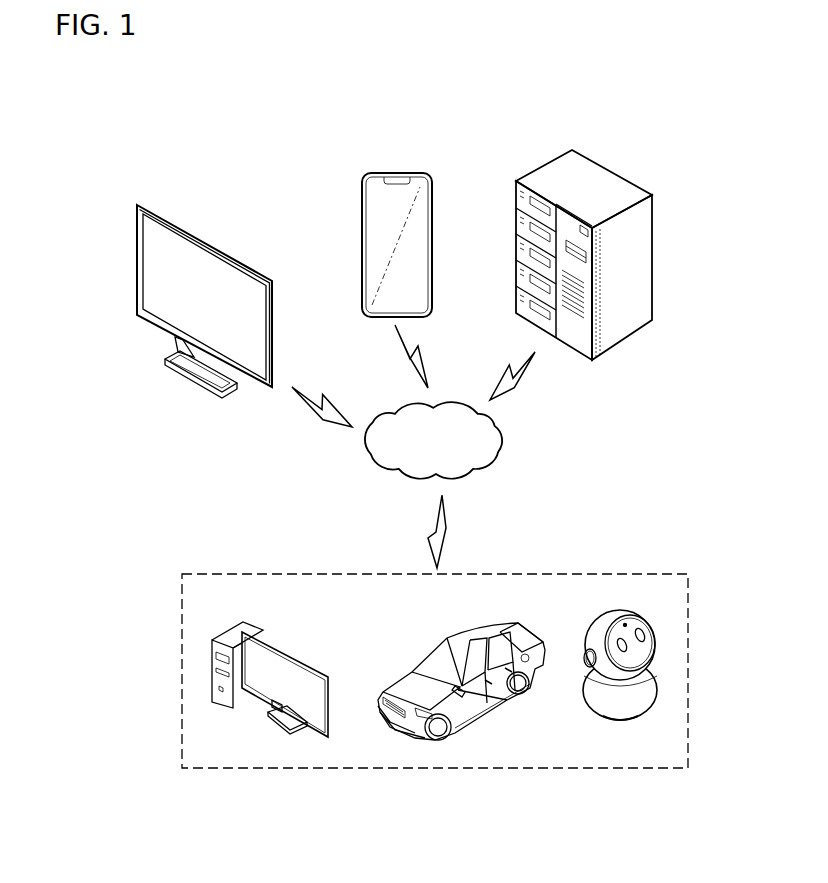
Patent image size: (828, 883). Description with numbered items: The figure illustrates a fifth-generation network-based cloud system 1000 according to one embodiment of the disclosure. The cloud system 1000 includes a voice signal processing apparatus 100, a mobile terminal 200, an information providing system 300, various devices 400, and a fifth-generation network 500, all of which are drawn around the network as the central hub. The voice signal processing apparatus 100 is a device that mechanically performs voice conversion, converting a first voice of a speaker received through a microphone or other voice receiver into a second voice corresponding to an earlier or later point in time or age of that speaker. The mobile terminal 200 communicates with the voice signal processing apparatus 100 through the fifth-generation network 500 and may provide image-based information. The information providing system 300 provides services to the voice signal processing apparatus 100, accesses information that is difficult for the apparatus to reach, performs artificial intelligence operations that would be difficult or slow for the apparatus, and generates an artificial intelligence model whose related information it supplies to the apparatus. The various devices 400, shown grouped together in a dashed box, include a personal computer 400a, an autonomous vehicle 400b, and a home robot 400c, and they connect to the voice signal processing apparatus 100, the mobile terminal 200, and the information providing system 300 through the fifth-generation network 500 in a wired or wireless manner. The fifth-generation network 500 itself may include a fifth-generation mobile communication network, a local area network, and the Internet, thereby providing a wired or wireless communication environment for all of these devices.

The voice signal processing apparatus 100 is at (241, 263).
The mobile terminal 200 is at (424, 174).
The information providing system 300 is at (623, 178).
The 5G network 500 is at (440, 397).
The various devices 400 is at (612, 573).
The personal computer 400a is at (291, 653).
The autonomous vehicle 400b is at (469, 628).
The home robot 400c is at (632, 612).
The cloud system 1000 is at (190, 810).